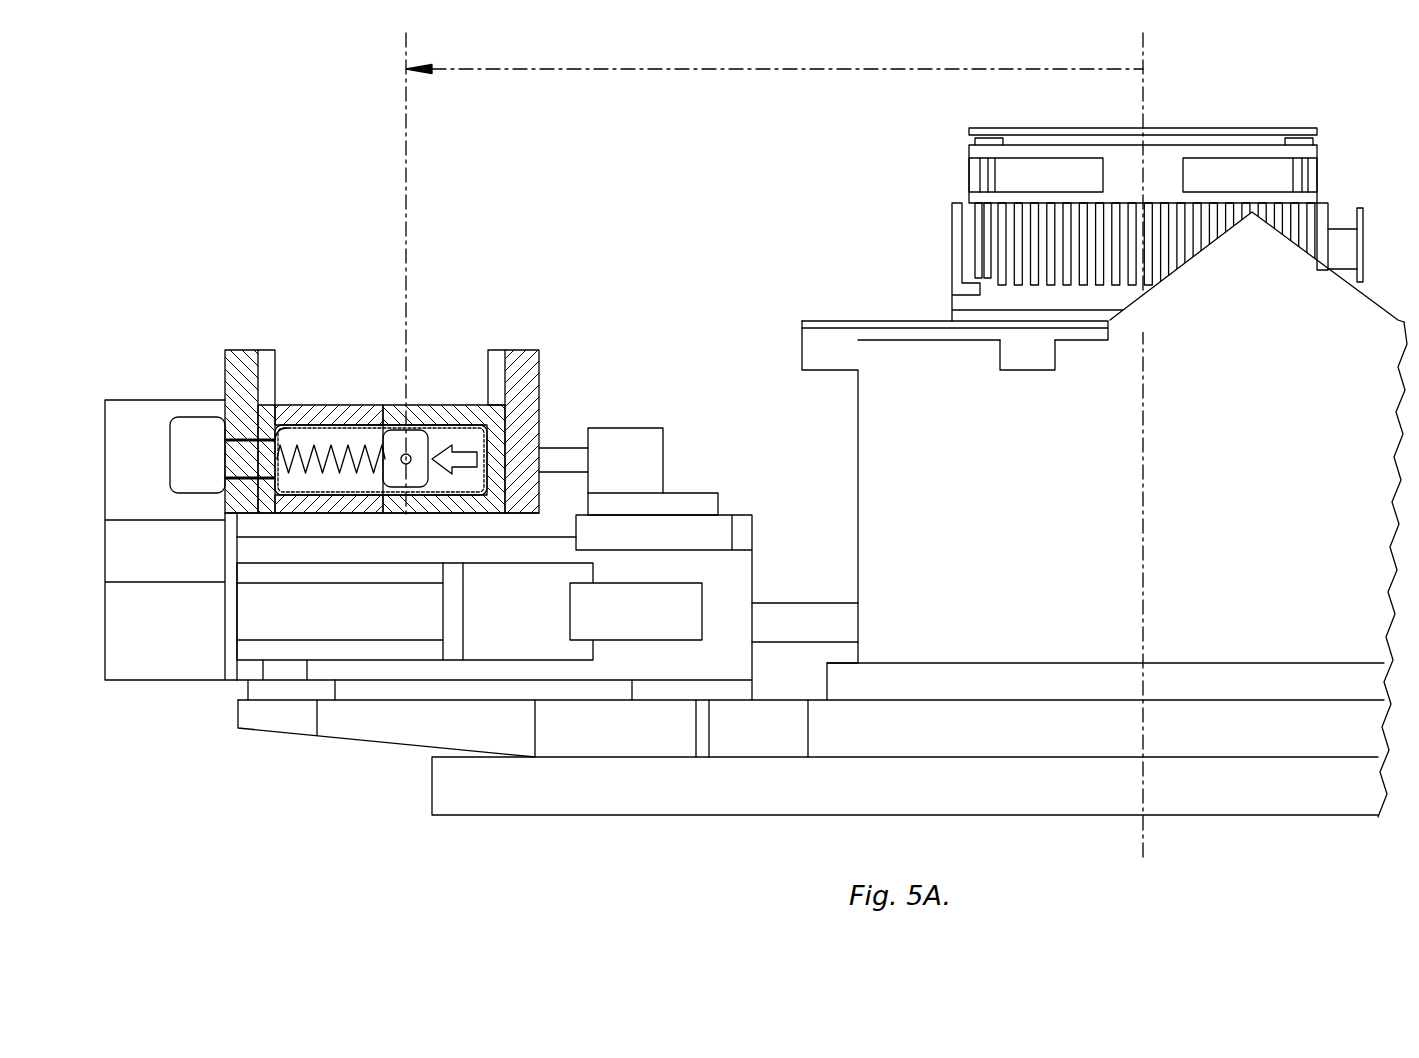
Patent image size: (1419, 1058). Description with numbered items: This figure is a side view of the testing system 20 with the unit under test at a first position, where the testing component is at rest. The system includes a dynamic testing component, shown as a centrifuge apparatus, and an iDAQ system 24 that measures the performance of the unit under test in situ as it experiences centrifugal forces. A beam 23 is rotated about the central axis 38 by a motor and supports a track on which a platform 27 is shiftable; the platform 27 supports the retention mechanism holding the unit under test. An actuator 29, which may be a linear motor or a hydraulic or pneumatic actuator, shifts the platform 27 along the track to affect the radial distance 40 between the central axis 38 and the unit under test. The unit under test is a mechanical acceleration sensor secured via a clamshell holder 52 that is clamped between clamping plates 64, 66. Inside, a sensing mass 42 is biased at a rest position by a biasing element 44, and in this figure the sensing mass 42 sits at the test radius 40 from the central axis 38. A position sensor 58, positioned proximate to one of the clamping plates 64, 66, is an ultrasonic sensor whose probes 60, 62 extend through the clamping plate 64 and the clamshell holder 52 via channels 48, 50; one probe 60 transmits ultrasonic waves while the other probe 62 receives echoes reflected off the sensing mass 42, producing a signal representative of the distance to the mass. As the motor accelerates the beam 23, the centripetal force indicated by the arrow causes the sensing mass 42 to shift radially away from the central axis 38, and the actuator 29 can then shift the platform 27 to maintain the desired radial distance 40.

The testing system 20 is at (824, 284).
The beam 23 is at (368, 717).
The iDAQ system 24 is at (1396, 296).
The platform 27 is at (682, 532).
The actuator 29 is at (120, 430).
The central axis 38 is at (1143, 93).
The radial line 40 is at (632, 69).
The sensing mass 42 is at (422, 441).
The biasing element 44 is at (368, 486).
The channel 48 is at (244, 438).
The channel 50 is at (234, 492).
The clamshell holder 52 is at (342, 408).
The position sensor 58 is at (160, 486).
The probe 60 is at (274, 432).
The probe 62 is at (286, 494).
The clamping plate 64 is at (243, 362).
The clamping plate 66 is at (527, 357).